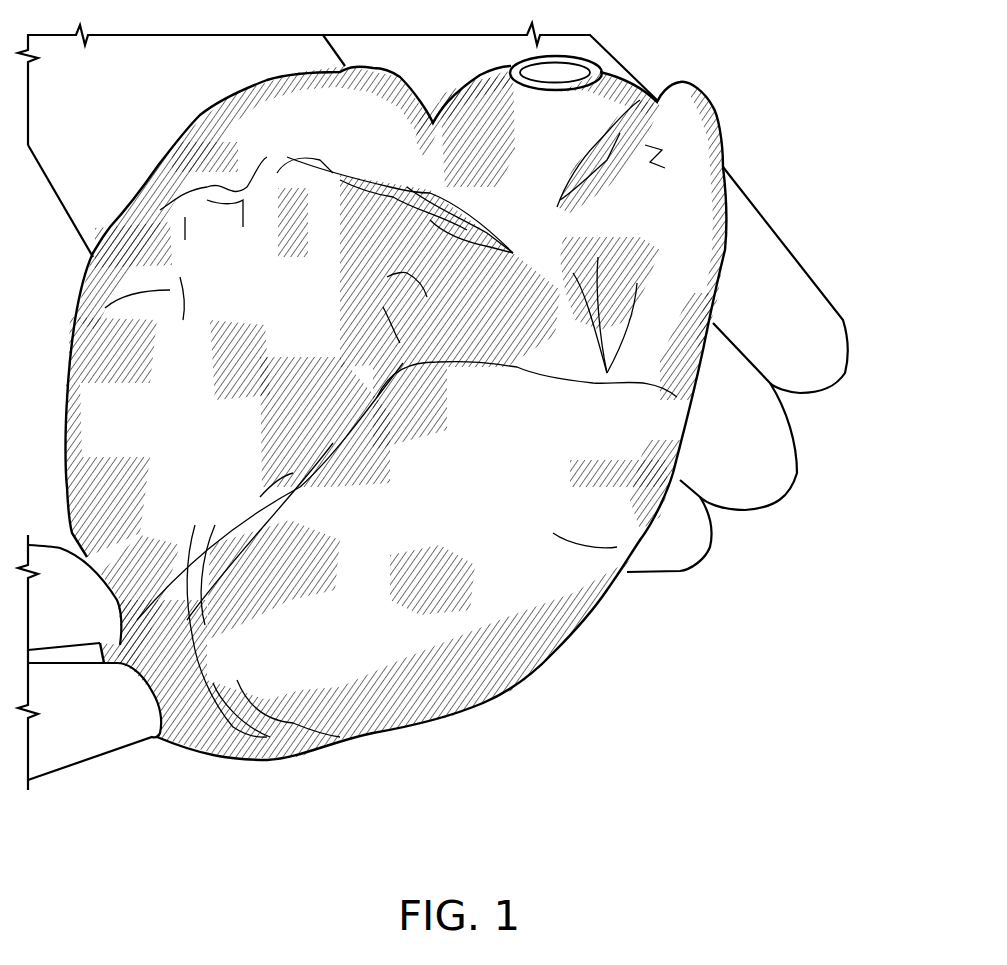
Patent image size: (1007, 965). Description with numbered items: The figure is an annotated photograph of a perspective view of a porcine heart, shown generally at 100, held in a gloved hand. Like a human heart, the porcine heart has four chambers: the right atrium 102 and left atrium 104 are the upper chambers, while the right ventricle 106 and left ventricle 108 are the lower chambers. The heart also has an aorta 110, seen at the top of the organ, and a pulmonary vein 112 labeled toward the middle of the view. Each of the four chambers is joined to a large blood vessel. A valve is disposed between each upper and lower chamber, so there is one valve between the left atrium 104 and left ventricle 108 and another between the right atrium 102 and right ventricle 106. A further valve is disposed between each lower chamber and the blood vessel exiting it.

The porcine heart 100 is at (877, 347).
The right atrium 102 is at (345, 118).
The left atrium 104 is at (672, 207).
The right ventricle 106 is at (197, 422).
The left ventricle 108 is at (388, 618).
The aorta 110 is at (572, 108).
The pulmonary vein 112 is at (497, 277).